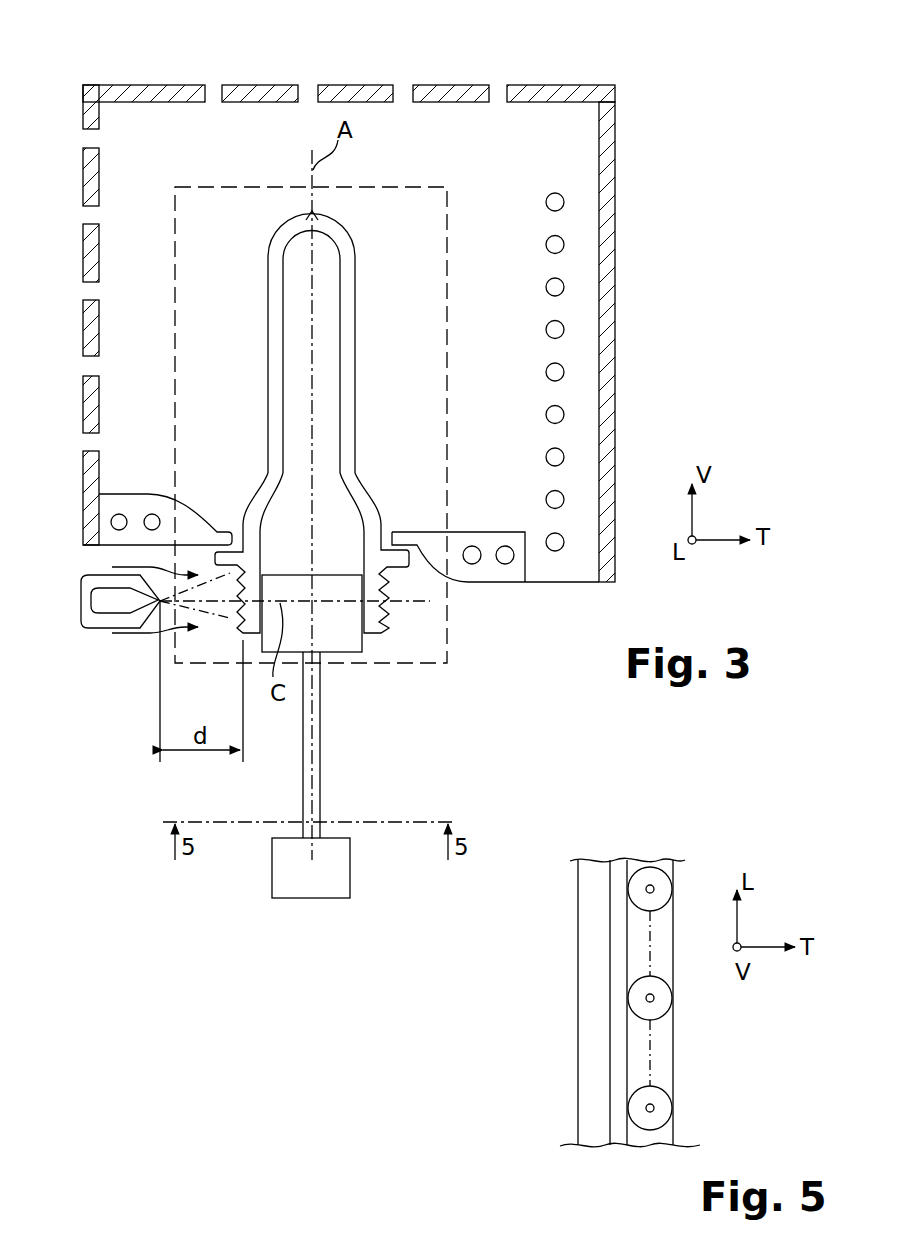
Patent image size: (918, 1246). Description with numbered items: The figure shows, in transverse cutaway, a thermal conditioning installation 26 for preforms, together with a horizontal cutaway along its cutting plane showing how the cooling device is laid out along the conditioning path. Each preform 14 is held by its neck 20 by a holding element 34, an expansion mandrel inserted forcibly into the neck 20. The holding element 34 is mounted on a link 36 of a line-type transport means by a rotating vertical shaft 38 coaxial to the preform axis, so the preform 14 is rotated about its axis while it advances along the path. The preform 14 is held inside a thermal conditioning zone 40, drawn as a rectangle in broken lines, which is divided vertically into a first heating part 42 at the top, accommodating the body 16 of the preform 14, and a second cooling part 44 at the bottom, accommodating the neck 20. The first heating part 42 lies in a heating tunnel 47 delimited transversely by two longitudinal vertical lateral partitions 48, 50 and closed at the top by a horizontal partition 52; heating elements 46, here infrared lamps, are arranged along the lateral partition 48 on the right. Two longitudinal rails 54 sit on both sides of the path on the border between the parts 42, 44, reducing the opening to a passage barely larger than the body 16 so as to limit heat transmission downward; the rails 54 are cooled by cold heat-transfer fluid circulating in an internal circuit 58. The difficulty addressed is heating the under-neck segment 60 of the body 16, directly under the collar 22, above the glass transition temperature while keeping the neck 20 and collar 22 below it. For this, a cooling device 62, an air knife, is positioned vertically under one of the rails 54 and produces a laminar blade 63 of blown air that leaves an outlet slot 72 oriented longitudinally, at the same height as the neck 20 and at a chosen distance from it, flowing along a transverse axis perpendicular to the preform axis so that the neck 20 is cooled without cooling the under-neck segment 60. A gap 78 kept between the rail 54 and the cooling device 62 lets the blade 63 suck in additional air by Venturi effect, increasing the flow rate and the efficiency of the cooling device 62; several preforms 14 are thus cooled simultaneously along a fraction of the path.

In FIG. 3, the preform 14 is at (318, 422).
In FIG. 5, the preform 14 is at (655, 897).
In FIG. 3, the body 16 is at (352, 330).
In FIG. 3, the neck 20 is at (373, 585).
In FIG. 3, the collar 22 is at (223, 558).
In FIG. 3, the thermal conditioning installation 26 is at (672, 158).
In FIG. 3, the holding element 34 is at (337, 642).
In FIG. 3, the link 36 is at (333, 863).
In FIG. 3, the rotating vertical shaft 38 is at (317, 762).
In FIG. 3, the thermal conditioning zone 40 is at (412, 187).
In FIG. 3, the first heating part 42 is at (218, 330).
In FIG. 3, the second cooling part 44 is at (415, 645).
In FIG. 3, the heating element 46 is at (556, 550).
In FIG. 3, the heating tunnel 47 is at (537, 80).
In FIG. 3, the lateral partition 48 is at (610, 290).
In FIG. 3, the lateral partition 50 is at (88, 262).
In FIG. 3, the horizontal partition 52 is at (352, 95).
In FIG. 3, the longitudinal rail 54 is at (135, 507).
In FIG. 5, the longitudinal rail 54 is at (620, 870).
In FIG. 3, the internal circuit 58 is at (152, 514).
In FIG. 3, the under-neck segment 60 is at (368, 508).
In FIG. 3, the cooling device 62 is at (100, 605).
In FIG. 5, the cooling device 62 is at (590, 1025).
In FIG. 3, the blade of blown gas 63 is at (218, 610).
In FIG. 3, the slot 72 is at (167, 617).
In FIG. 5, the slot 72 is at (620, 1123).
In FIG. 3, the gap 78 is at (118, 556).